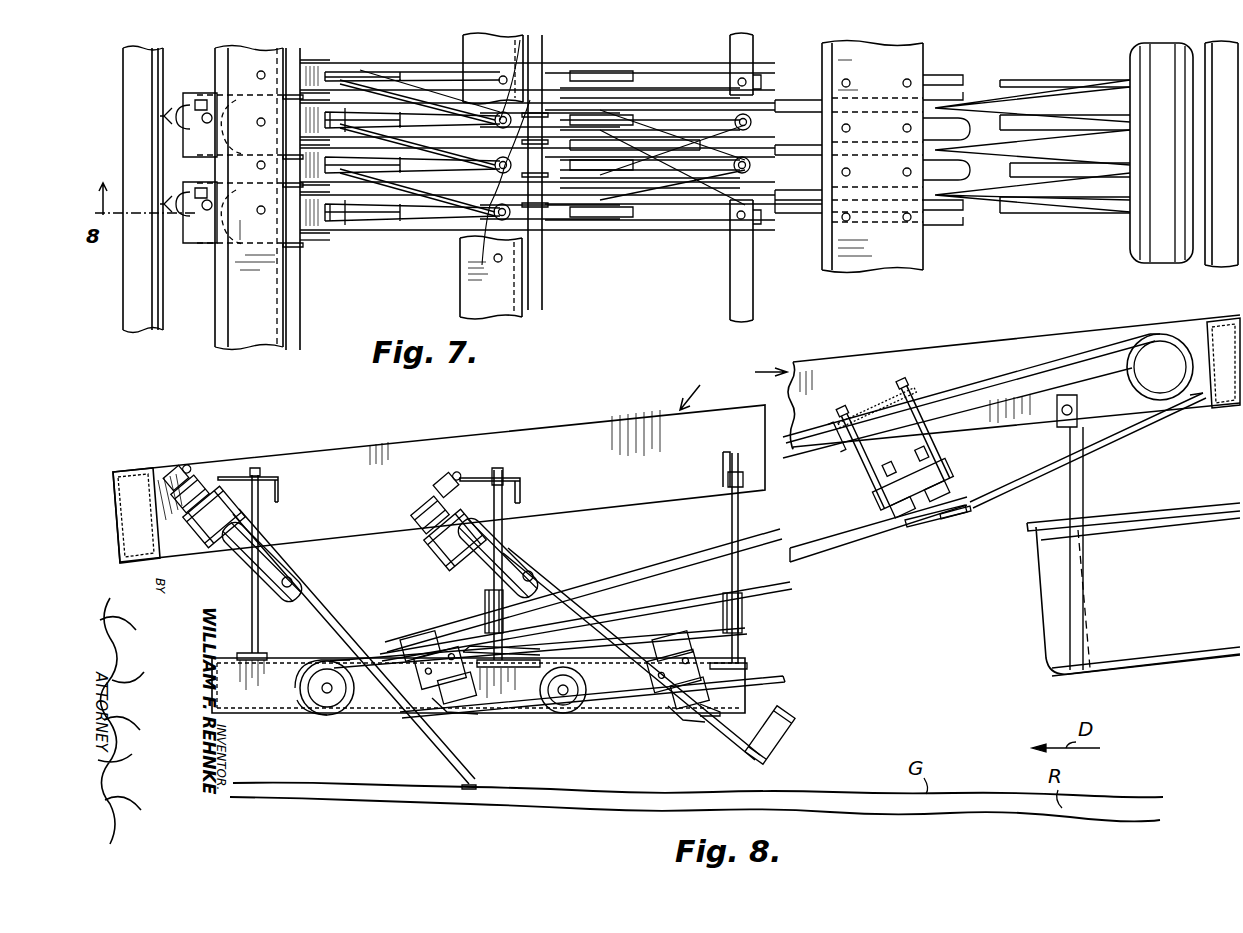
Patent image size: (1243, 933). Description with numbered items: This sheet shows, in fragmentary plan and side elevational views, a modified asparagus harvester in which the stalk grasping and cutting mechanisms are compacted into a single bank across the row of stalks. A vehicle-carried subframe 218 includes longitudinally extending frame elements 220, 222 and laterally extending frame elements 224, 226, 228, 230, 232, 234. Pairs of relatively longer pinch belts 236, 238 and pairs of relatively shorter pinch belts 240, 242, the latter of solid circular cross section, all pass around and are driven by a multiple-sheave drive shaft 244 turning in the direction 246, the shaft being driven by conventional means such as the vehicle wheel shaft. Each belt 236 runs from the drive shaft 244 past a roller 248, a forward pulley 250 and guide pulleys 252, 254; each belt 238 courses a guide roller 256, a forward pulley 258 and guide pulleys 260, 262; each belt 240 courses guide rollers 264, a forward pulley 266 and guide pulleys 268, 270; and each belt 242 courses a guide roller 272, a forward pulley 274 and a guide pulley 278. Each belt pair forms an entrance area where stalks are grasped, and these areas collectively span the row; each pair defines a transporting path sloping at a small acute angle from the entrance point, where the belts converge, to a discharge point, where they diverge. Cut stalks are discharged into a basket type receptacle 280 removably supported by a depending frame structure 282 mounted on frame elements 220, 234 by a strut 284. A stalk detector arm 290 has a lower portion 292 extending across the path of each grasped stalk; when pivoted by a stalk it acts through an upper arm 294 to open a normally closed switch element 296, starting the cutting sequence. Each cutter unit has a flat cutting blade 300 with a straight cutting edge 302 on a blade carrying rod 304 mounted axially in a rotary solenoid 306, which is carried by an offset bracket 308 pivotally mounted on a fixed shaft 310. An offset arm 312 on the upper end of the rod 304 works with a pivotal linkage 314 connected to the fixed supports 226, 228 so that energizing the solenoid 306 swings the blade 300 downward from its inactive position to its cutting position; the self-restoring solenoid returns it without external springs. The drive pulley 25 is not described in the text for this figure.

In FIG. 8, the drive pulley 25 is at (318, 668).
In FIG. 8, the subframe 218 is at (733, 387).
In FIG. 8, the longitudinally extending frame element 220 is at (540, 432).
In FIG. 8, the longitudinally extending frame element 222 is at (509, 722).
In FIG. 7, the laterally extending frame element 224 is at (143, 328).
In FIG. 8, the laterally extending frame element 224 is at (131, 466).
In FIG. 7, the laterally extending frame element 226 is at (246, 342).
In FIG. 8, the laterally extending frame element 226 is at (274, 476).
In FIG. 7, the laterally extending frame element 228 is at (540, 40).
In FIG. 8, the laterally extending frame element 228 is at (478, 478).
In FIG. 7, the laterally extending frame element 230 is at (730, 299).
In FIG. 8, the laterally extending frame element 230 is at (725, 470).
In FIG. 7, the laterally extending frame element 232 is at (878, 266).
In FIG. 8, the laterally extending frame element 232 is at (873, 400).
In FIG. 7, the laterally extending frame element 234 is at (1212, 265).
In FIG. 7, the pinch belt 236 is at (425, 70).
In FIG. 8, the pinch belt 236 is at (414, 628).
In FIG. 7, the pinch belt 238 is at (405, 112).
In FIG. 7, the pinch belt 240 is at (612, 120).
In FIG. 8, the pinch belt 240 is at (574, 649).
In FIG. 7, the pinch belt 242 is at (652, 158).
In FIG. 7, the multiple-sheave drive shaft 244 is at (1135, 258).
In FIG. 8, the multiple-sheave drive shaft 244 is at (1183, 363).
In FIG. 8, the drive direction 246 is at (1112, 390).
In FIG. 7, the roller 248 is at (498, 171).
In FIG. 8, the roller 248 is at (486, 594).
In FIG. 7, the forward pulley 250 is at (376, 66).
In FIG. 7, the guide pulley 252 is at (470, 224).
In FIG. 8, the guide pulley 252 is at (480, 684).
In FIG. 8, the guide pulley 254 is at (924, 536).
In FIG. 7, the guide roller 256 is at (490, 130).
In FIG. 7, the forward pulley 258 is at (343, 123).
In FIG. 7, the guide pulley 260 is at (489, 79).
In FIG. 7, the guide pulley 262 is at (955, 104).
In FIG. 8, the guide roller 264 is at (722, 594).
In FIG. 8, the forward pulley 266 is at (568, 714).
In FIG. 8, the guide pulley 268 is at (716, 708).
In FIG. 8, the guide pulley 270 is at (946, 520).
In FIG. 7, the guide roller 272 is at (760, 160).
In FIG. 7, the forward pulley 274 is at (584, 165).
In FIG. 7, the guide pulley 278 is at (968, 190).
In FIG. 8, the basket type receptacle 280 is at (1170, 590).
In FIG. 8, the depending frame structure 282 is at (1161, 670).
In FIG. 8, the strut 284 is at (1084, 478).
In FIG. 8, the stalk detector arm 290 is at (440, 700).
In FIG. 7, the lower portion of detector arm 292 is at (438, 80).
In FIG. 8, the lower portion of detector arm 292 is at (454, 702).
In FIG. 8, the upper arm 294 is at (430, 650).
In FIG. 7, the switch element 296 is at (720, 140).
In FIG. 8, the switch element 296 is at (400, 640).
In FIG. 8, the cutting blade 300 is at (476, 784).
In FIG. 8, the cutting edge 302 is at (775, 704).
In FIG. 7, the blade carrying rod 304 is at (350, 226).
In FIG. 8, the blade carrying rod 304 is at (308, 602).
In FIG. 7, the rotary solenoid 306 is at (228, 93).
In FIG. 8, the rotary solenoid 306 is at (228, 480).
In FIG. 8, the offset bracket 308 is at (278, 562).
In FIG. 7, the fixed shaft 310 is at (300, 316).
In FIG. 8, the fixed shaft 310 is at (296, 582).
In FIG. 8, the offset arm 312 is at (182, 512).
In FIG. 8, the pivotal linkage 314 is at (188, 478).